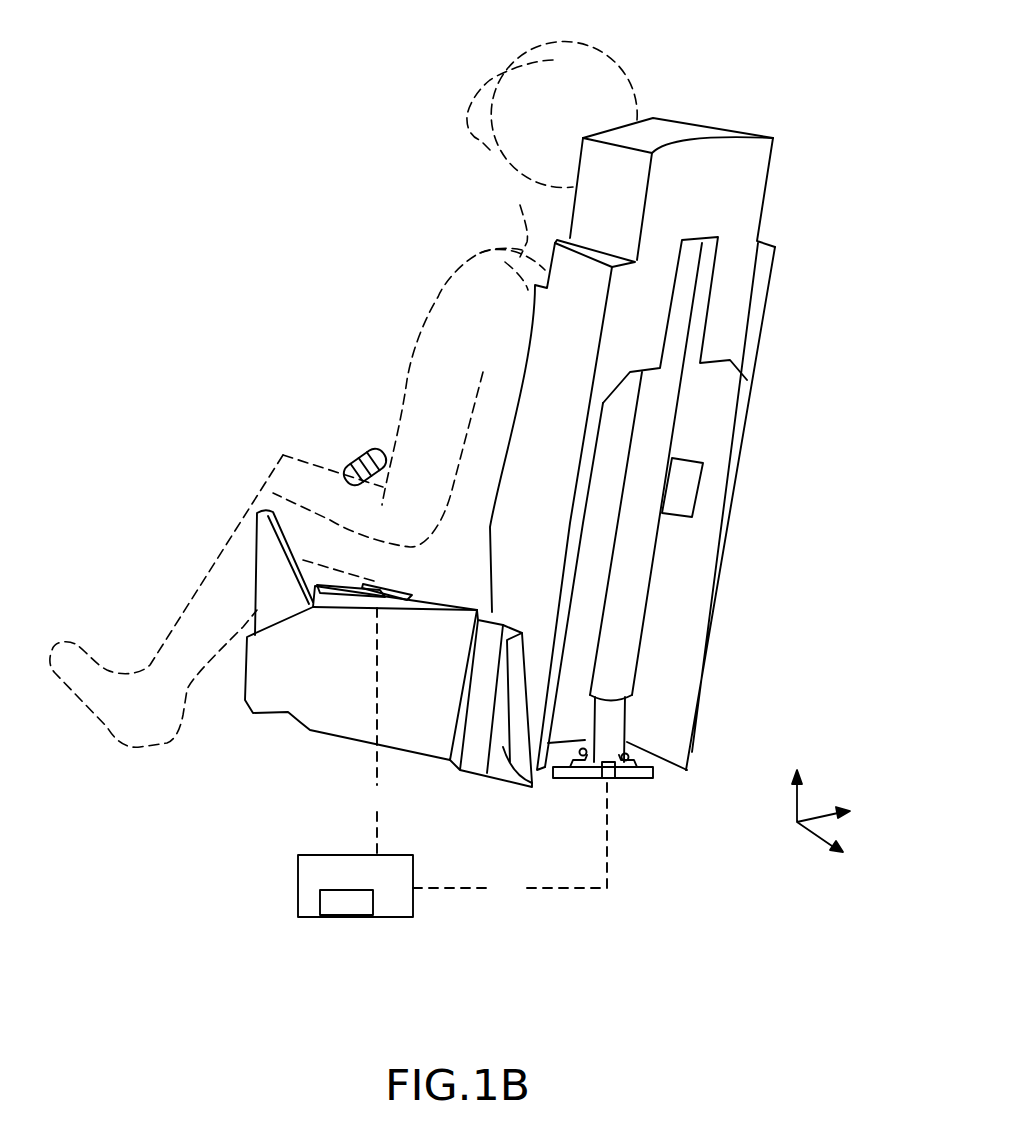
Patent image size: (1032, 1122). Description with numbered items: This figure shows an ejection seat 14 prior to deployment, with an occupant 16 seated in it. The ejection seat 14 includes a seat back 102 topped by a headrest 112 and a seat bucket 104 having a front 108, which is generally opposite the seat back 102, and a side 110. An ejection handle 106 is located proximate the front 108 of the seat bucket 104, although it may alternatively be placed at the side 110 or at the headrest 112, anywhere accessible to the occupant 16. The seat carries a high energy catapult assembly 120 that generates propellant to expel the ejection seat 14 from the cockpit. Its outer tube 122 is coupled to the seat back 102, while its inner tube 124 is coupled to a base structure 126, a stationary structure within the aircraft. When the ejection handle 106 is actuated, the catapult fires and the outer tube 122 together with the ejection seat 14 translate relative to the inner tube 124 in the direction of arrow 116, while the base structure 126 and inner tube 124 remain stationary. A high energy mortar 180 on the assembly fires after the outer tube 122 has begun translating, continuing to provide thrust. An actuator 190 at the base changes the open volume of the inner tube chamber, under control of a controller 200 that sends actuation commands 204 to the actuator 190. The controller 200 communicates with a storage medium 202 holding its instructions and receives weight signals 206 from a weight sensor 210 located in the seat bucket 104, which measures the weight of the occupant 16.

The ejection seat 14 is at (812, 138).
The occupant 16 is at (638, 65).
The seat back 102 is at (657, 335).
The seat bucket 104 is at (373, 648).
The ejection handle 106 is at (350, 453).
The front 108 is at (340, 588).
The side 110 is at (312, 667).
The headrest 112 is at (702, 129).
The arrow 116 is at (832, 398).
The high energy catapult assembly 120 is at (683, 543).
The outer tube 122 is at (627, 630).
The inner tube 124 is at (610, 728).
The base structure 126 is at (593, 774).
The high energy mortar 180 is at (677, 485).
The actuator 190 is at (613, 773).
The controller 200 is at (355, 916).
The storage medium 202 is at (374, 887).
The actuation commands 204 is at (510, 842).
The weight signals 206 is at (377, 731).
The weight sensor 210 is at (397, 597).